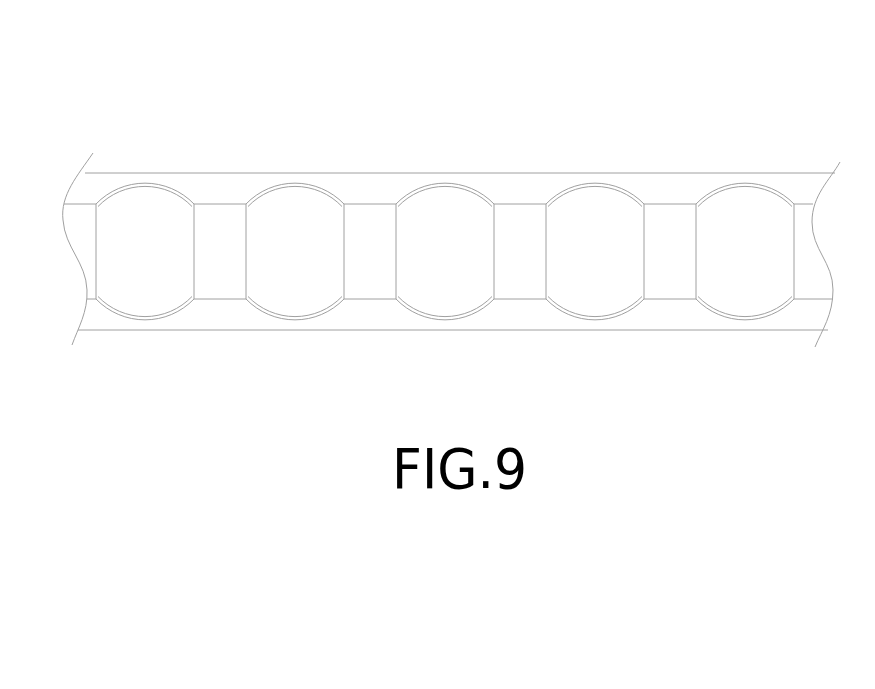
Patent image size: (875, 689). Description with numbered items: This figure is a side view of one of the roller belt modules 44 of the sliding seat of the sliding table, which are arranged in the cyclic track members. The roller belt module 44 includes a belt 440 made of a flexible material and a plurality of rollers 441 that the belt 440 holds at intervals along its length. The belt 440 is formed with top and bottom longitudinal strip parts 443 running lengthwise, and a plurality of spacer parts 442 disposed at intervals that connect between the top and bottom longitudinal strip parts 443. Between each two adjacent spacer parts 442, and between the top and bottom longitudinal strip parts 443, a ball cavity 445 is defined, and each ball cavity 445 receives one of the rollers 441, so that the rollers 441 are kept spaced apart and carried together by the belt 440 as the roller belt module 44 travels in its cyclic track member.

The roller belt module 44 is at (256, 124).
The belt 440 is at (610, 173).
The roller 441 is at (449, 211).
The spacer part 442 is at (212, 213).
The top and bottom longitudinal strip parts 443 is at (525, 185).
The ball cavity 445 is at (293, 283).